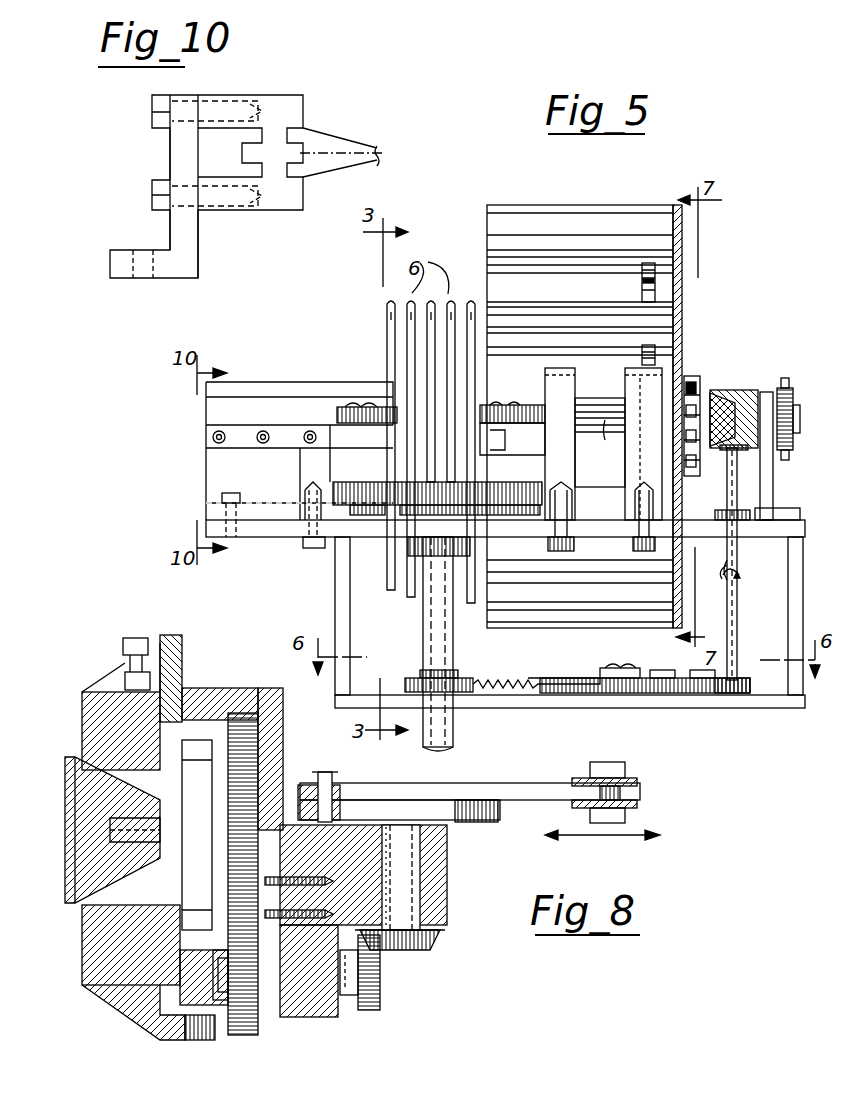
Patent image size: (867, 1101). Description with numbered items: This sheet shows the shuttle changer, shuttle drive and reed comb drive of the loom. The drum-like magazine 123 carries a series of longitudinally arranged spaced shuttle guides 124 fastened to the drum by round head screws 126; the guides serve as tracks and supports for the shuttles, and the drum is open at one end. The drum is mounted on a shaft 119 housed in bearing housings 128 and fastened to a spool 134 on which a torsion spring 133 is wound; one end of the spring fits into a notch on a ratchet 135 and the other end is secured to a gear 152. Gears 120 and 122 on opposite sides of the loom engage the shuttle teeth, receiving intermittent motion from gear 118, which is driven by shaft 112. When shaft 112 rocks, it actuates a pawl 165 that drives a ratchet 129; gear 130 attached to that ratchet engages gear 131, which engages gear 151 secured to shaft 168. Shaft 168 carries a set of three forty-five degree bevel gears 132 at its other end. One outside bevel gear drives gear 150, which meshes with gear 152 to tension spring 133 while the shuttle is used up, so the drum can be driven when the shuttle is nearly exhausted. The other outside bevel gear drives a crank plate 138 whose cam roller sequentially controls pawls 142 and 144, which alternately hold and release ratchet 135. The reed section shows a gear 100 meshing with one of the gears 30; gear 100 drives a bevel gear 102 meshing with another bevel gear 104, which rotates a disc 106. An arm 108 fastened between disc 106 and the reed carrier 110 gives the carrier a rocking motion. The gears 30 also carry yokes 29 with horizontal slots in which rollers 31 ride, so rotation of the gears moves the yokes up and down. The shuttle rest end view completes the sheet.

In FIG. 8, the yoke 29 is at (180, 762).
In FIG. 8, the gear 30 is at (250, 715).
In FIG. 8, the roller 31 is at (198, 858).
In FIG. 8, the gear 100 is at (245, 1035).
In FIG. 8, the bevel gear 102 is at (372, 1010).
In FIG. 8, the bevel gear 104 is at (410, 950).
In FIG. 8, the rotating disc 106 is at (480, 822).
In FIG. 8, the arm 108 is at (524, 786).
In FIG. 8, the reed carrier 110 is at (637, 790).
In FIG. 5, the shaft 112 is at (453, 732).
In FIG. 5, the gear 118 is at (448, 515).
In FIG. 5, the shaft 119 is at (600, 442).
In FIG. 5, the gear 120 is at (530, 380).
In FIG. 5, the gear 122 is at (338, 412).
In FIG. 5, the drum-like magazine 123 is at (682, 250).
In FIG. 5, the shuttle guide 124 is at (632, 208).
In FIG. 5, the round head screw 126 is at (642, 292).
In FIG. 5, the bearing housing 128 is at (634, 386).
In FIG. 5, the ratchet 129 is at (634, 668).
In FIG. 5, the gear 130 is at (645, 695).
In FIG. 5, the gear 131 is at (680, 670).
In FIG. 5, the bevel gear 132 is at (725, 394).
In FIG. 5, the torsion spring 133 is at (692, 380).
In FIG. 5, the spool 134 is at (765, 393).
In FIG. 5, the ratchet 135 is at (686, 462).
In FIG. 5, the crank plate 138 is at (686, 411).
In FIG. 5, the pawl 142 is at (686, 397).
In FIG. 5, the pawl 144 is at (686, 436).
In FIG. 5, the gear 150 is at (793, 390).
In FIG. 5, the gear 151 is at (736, 695).
In FIG. 5, the gear 152 is at (796, 405).
In FIG. 5, the pawl 165 is at (541, 677).
In FIG. 5, the shaft 168 is at (737, 555).